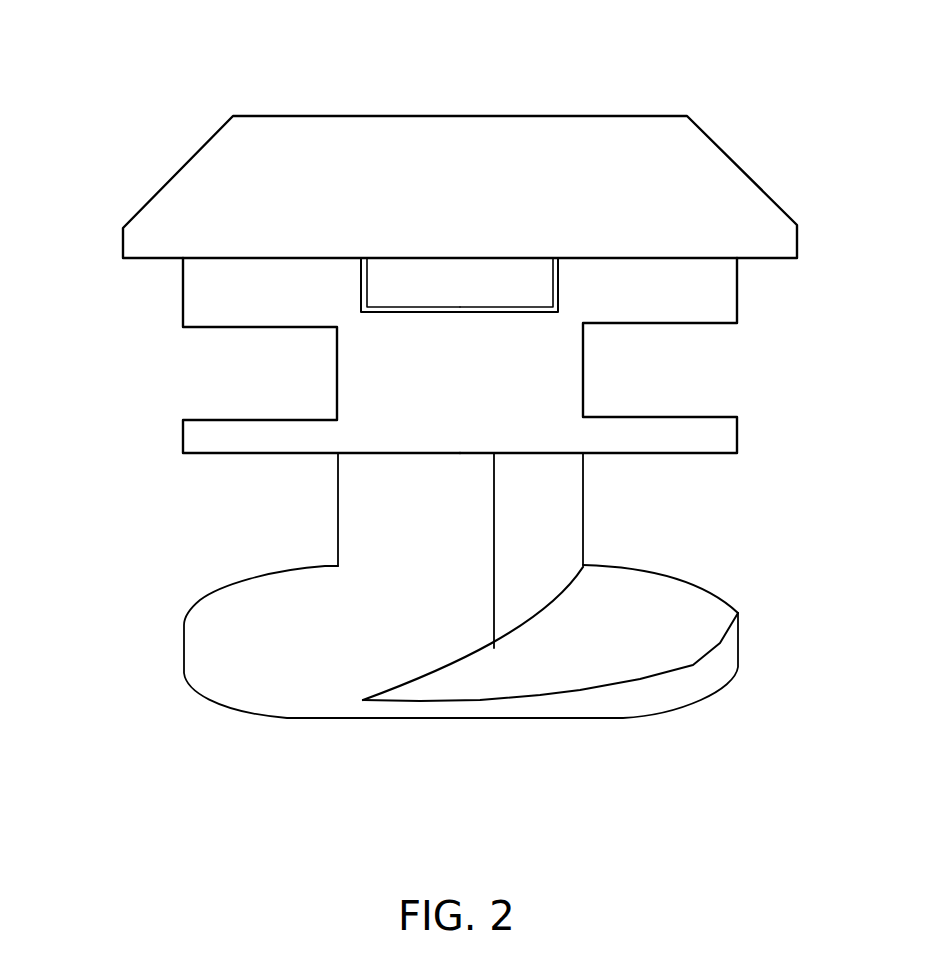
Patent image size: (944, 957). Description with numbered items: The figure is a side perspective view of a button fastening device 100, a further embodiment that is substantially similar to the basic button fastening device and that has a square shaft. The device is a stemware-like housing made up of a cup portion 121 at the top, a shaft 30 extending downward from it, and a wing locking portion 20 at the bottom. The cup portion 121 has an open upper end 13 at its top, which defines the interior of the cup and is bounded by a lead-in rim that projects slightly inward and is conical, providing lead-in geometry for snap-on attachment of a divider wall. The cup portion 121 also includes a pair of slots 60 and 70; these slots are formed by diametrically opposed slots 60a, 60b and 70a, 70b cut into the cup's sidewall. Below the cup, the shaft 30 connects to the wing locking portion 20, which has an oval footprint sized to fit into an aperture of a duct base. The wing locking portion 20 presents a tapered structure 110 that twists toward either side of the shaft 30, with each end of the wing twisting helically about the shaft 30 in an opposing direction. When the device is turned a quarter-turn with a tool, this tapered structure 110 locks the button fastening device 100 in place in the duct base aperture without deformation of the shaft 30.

The button fastening device 100 is at (652, 72).
The open upper end 13 is at (470, 116).
The cup portion 121 is at (108, 102).
The slot 60 is at (390, 285).
The slot 60a is at (537, 288).
The slot 60b is at (512, 278).
The slot 70 is at (262, 389).
The slot 70a is at (247, 358).
The slot 70b is at (663, 352).
The shaft 30 is at (587, 508).
The tapered structure 110 is at (650, 600).
The wing locking portion 20 is at (738, 615).